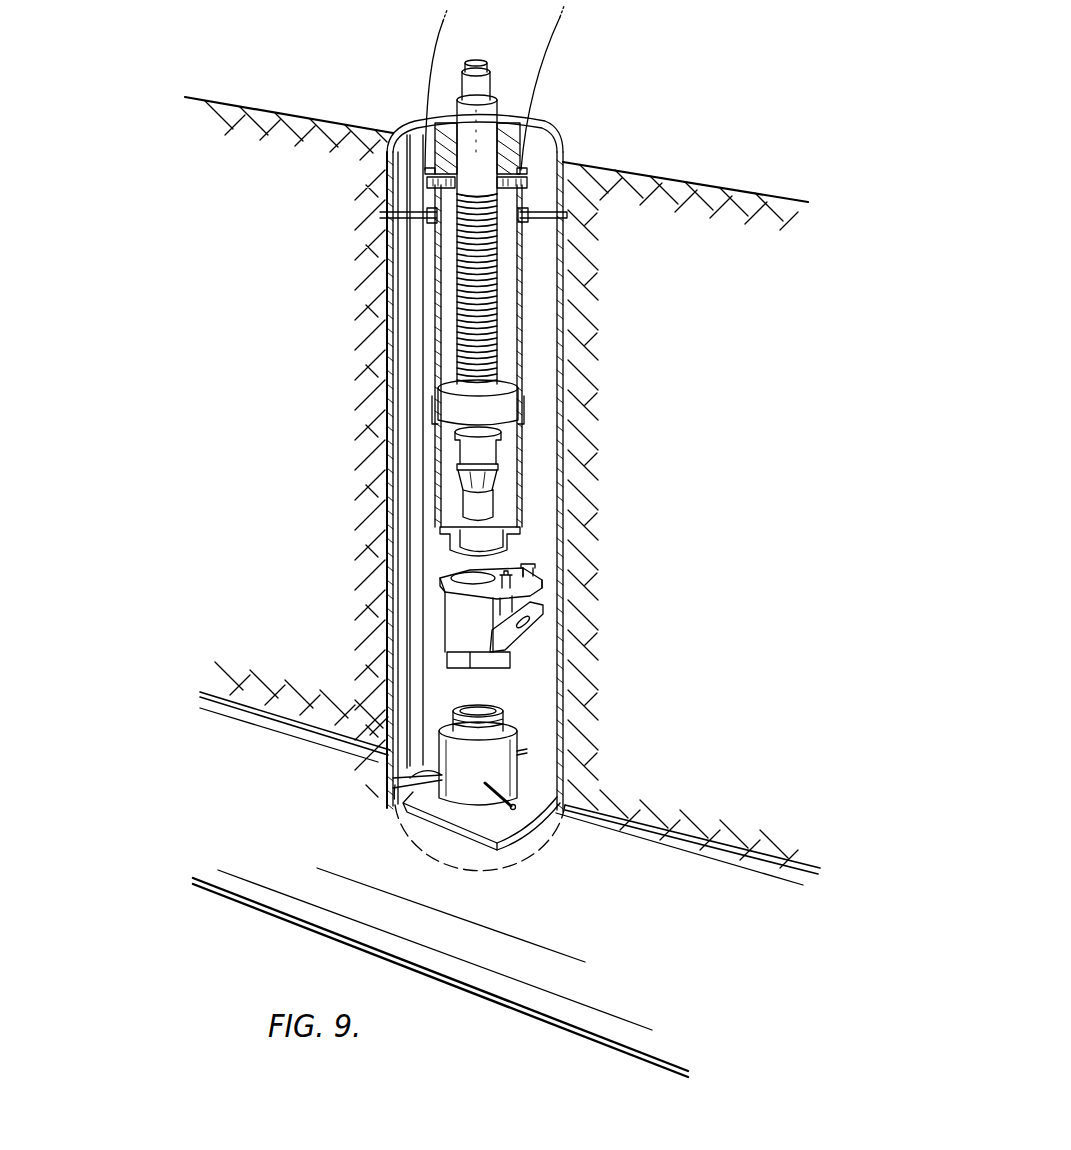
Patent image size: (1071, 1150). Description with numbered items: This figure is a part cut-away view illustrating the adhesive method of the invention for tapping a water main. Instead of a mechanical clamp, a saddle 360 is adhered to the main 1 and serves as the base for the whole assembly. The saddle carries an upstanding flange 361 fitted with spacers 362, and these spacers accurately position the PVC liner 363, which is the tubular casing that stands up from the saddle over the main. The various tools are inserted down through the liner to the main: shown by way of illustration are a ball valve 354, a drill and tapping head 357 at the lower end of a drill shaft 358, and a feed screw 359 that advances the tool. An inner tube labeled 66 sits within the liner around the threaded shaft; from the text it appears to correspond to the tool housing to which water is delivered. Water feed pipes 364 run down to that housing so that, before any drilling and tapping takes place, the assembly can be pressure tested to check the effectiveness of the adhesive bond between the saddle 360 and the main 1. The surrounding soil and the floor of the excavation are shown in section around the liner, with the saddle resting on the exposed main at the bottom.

The main 1 is at (710, 895).
The inner tube 66 is at (520, 302).
The ball valve 354 is at (455, 626).
The drill and tapping head 357 is at (492, 481).
The drill shaft 358 is at (490, 67).
The feed screw 359 is at (497, 355).
The saddle 360 is at (448, 812).
The upstanding flange 361 is at (395, 213).
The spacers 362 is at (393, 776).
The PVC liner 363 is at (568, 683).
The water feed pipes 364 is at (533, 58).